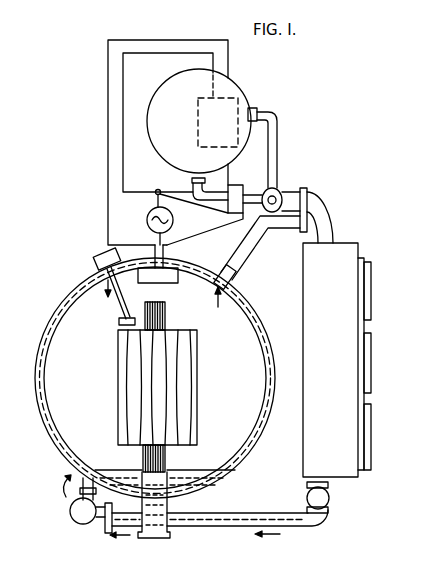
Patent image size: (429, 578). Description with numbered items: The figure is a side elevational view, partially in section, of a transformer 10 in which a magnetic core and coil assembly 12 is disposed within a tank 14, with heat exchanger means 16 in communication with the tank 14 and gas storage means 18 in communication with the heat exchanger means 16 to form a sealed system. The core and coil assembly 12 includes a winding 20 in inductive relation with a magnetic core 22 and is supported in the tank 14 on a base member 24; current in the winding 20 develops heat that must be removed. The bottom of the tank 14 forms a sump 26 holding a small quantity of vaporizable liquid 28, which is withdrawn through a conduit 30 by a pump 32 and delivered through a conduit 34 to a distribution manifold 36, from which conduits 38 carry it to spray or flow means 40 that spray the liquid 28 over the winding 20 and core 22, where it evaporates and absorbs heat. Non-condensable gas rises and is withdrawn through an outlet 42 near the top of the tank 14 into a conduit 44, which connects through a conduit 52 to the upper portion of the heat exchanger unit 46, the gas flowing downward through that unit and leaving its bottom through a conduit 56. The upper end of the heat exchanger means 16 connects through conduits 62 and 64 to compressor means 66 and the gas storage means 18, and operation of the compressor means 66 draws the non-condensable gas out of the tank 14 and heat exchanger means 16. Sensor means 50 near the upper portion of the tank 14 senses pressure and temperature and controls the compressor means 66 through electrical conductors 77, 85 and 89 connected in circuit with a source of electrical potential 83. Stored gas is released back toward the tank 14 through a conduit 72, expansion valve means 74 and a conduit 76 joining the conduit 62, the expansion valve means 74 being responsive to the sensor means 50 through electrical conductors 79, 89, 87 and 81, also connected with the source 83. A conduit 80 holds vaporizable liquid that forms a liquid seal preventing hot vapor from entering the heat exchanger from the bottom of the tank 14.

The transformer 10 is at (63, 279).
The magnetic core and coil assembly 12 is at (118, 362).
The tank 14 is at (268, 312).
The heat exchanger means 16 is at (344, 289).
The gas storage means 18 is at (172, 78).
The winding 20 is at (185, 388).
The magnetic core 22 is at (166, 315).
The base member 24 is at (172, 468).
The sump 26 is at (170, 505).
The vaporizable liquid 28 is at (112, 474).
The conduit 30 is at (120, 510).
The pump 32 is at (70, 510).
The conduit 34 is at (56, 448).
The distribution manifold 36 is at (100, 254).
The conduits 38 is at (118, 308).
The spray or flow means 40 is at (120, 322).
The outlet 42 is at (222, 285).
The conduit 44 is at (250, 243).
The heat exchanger unit 46 is at (303, 450).
The sensor means 50 is at (160, 280).
The conduit 52 is at (322, 232).
The conduit 56 is at (330, 490).
The conduit 62 is at (320, 205).
The conduit 64 is at (278, 140).
The compressor means 66 is at (198, 122).
The conduit 72 is at (192, 188).
The expansion valve means 74 is at (236, 185).
The conduit 76 is at (266, 190).
The electrical conductor 77 is at (108, 108).
The electrical conductor 79 is at (150, 245).
The conduit 80 is at (262, 513).
The electrical conductor 81 is at (192, 237).
The source of electrical potential 83 is at (148, 216).
The electrical conductor 85 is at (123, 115).
The electrical conductor 87 is at (158, 190).
The electrical conductor 89 is at (178, 214).